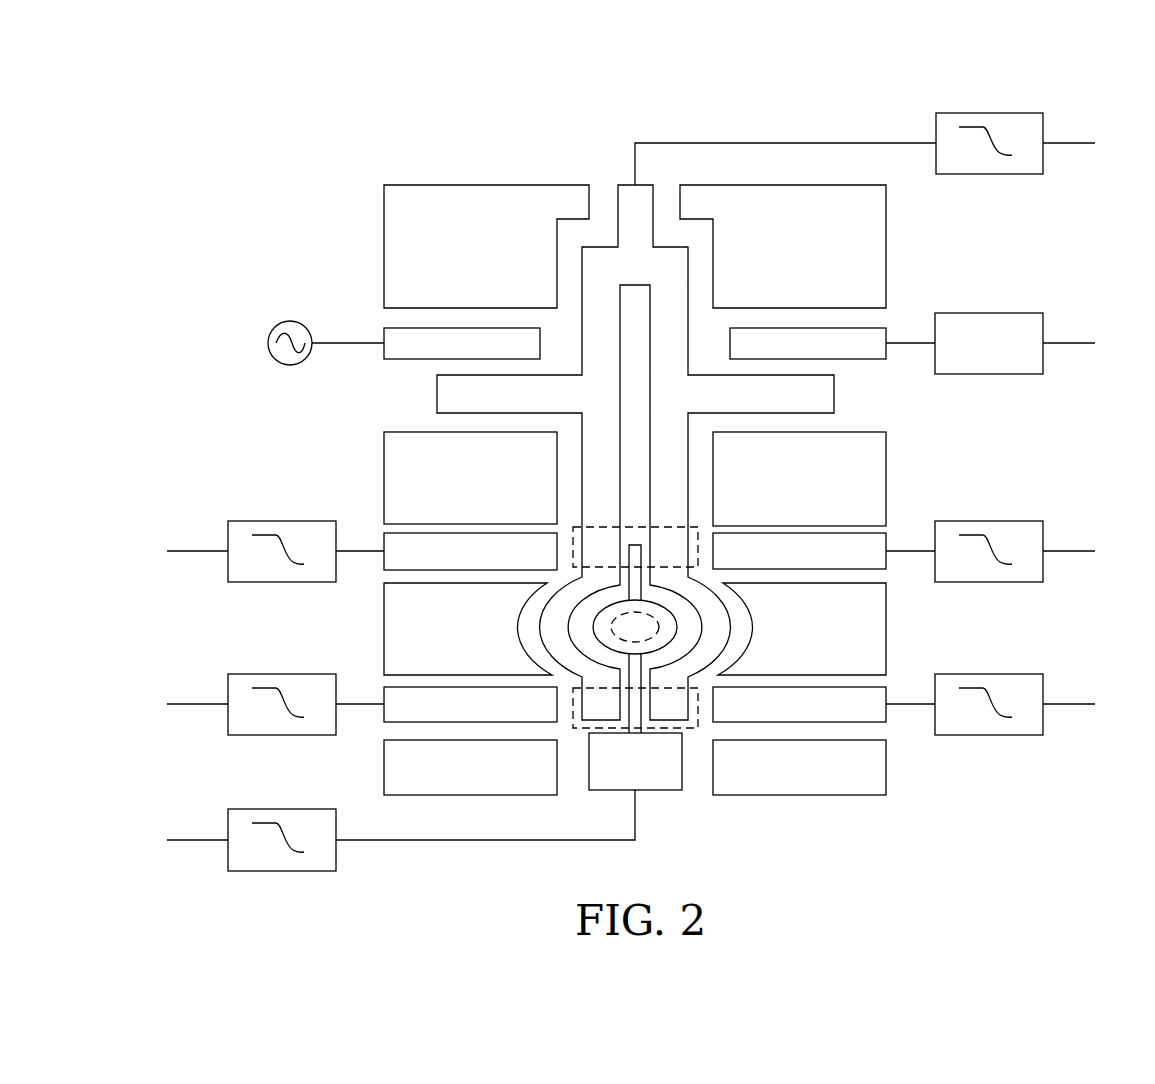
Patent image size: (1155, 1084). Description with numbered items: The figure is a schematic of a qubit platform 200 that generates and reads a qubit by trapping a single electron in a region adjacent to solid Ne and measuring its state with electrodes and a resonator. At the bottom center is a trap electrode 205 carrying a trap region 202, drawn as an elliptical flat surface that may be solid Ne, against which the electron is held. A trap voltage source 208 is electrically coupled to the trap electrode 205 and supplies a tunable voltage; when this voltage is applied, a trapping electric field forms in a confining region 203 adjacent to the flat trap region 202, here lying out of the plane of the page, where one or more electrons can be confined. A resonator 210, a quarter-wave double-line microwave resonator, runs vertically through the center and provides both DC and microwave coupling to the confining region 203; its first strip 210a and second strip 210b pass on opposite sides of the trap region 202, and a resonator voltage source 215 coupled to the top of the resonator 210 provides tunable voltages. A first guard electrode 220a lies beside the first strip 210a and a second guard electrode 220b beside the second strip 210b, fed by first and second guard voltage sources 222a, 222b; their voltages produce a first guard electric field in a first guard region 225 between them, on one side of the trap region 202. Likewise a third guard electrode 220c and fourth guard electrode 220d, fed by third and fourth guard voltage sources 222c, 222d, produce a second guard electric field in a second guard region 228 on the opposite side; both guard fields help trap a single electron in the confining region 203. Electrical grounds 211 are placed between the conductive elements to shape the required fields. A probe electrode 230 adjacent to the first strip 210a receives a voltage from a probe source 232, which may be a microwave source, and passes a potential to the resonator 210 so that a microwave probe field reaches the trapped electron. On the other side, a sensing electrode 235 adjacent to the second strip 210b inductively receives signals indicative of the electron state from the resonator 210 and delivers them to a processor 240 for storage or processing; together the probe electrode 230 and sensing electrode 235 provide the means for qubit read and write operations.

The qubit platform 200 is at (180, 112).
The trap region 202 is at (678, 627).
The confining region 203 is at (610, 626).
The trap electrode 205 is at (658, 792).
The trap voltage source 208 is at (228, 810).
The resonator 210 is at (613, 431).
The first strip 210a is at (543, 660).
The second strip 210b is at (689, 477).
The electrical grounds 211 is at (912, 449).
The resonator voltage source 215 is at (989, 113).
The first guard electrode 220a is at (384, 537).
The second guard electrode 220b is at (886, 537).
The third guard electrode 220c is at (384, 692).
The fourth guard electrode 220d is at (886, 720).
The first guard voltage source 222a is at (228, 525).
The second guard voltage source 222b is at (1043, 562).
The third guard voltage source 222c is at (228, 678).
The fourth guard voltage source 222d is at (1043, 715).
The first guard region 225 is at (698, 543).
The second guard region 228 is at (685, 728).
The probe electrode 230 is at (384, 330).
The probe source 232 is at (275, 327).
The sensing electrode 235 is at (886, 328).
The processor 240 is at (1043, 366).